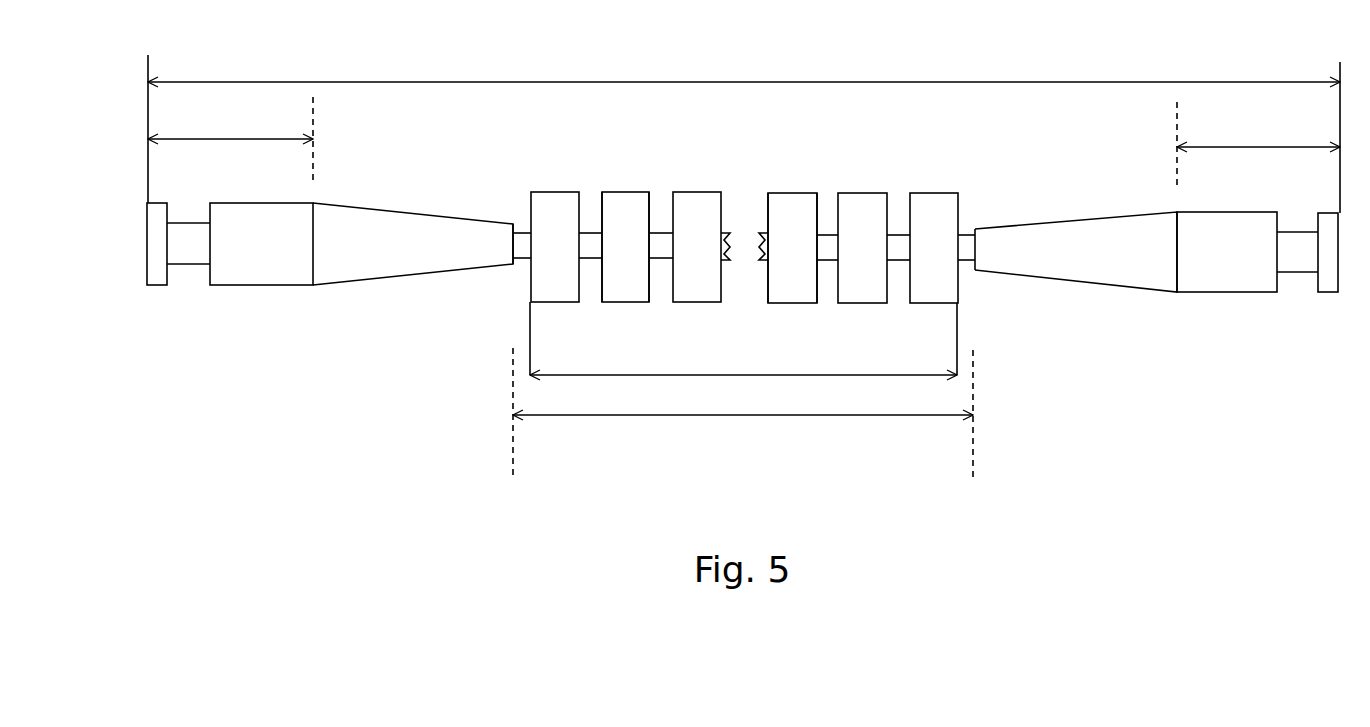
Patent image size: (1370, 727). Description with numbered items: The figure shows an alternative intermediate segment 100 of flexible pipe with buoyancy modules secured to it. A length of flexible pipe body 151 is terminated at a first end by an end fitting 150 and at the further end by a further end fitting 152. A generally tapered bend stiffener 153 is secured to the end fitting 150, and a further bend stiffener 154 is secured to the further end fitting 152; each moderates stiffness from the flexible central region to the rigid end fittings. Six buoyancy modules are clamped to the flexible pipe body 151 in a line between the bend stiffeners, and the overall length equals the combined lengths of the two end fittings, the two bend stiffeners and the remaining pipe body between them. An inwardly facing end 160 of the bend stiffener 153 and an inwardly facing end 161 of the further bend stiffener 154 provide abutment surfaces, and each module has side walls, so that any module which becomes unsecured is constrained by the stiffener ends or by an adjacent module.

The intermediate segment of flexible pipe 100 is at (743, 301).
The end fitting 150 is at (1213, 278).
The flexible pipe body 151 is at (965, 233).
The further end fitting 152 is at (243, 270).
The bend stiffener 153 is at (1083, 267).
The further bend stiffener 154 is at (390, 262).
The inwardly facing end of the first bend stiffener 160 is at (975, 272).
The inwardly facing end of the further bend stiffener 161 is at (513, 268).